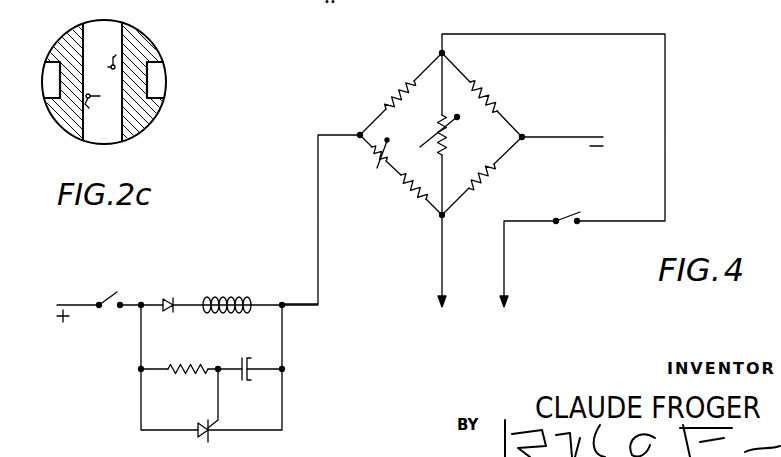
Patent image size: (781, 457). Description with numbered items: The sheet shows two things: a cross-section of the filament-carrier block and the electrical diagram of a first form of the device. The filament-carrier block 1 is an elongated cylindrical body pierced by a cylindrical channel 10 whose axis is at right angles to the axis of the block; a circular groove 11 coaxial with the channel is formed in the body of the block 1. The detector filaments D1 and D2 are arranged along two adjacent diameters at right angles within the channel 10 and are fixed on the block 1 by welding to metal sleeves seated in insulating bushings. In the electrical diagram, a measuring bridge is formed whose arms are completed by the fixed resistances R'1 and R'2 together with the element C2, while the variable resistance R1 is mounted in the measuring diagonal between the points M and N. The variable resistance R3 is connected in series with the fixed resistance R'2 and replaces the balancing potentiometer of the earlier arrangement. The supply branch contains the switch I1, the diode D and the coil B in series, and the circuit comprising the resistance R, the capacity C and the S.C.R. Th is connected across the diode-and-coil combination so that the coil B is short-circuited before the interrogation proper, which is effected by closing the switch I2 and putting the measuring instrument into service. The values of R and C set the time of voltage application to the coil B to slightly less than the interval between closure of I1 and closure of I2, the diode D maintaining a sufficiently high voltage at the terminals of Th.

In FIG. 2C, the filament-carrier block 1 is at (147, 50).
In FIG. 2C, the cylindrical channel 10 is at (127, 128).
In FIG. 2C, the circular groove 11 is at (45, 84).
In FIG. 2C, the detector filament D1 is at (102, 52).
In FIG. 4, the detector filament D1 is at (482, 95).
In FIG. 2C, the detector filament D2 is at (97, 115).
In FIG. 4, the bridge node M is at (456, 46).
In FIG. 4, the bridge node N is at (451, 224).
In FIG. 4, the fixed resistance arm R'1 is at (401, 94).
In FIG. 4, the variable resistance R1 is at (445, 134).
In FIG. 4, the variable resistance R3 is at (378, 167).
In FIG. 4, the fixed resistance arm R'2 is at (414, 200).
In FIG. 4, the bridge element C2 is at (482, 176).
In FIG. 4, the switch I1 is at (108, 318).
In FIG. 4, the switch I2 is at (565, 235).
In FIG. 4, the diode D is at (168, 292).
In FIG. 4, the coil B is at (227, 293).
In FIG. 4, the resistance R is at (194, 357).
In FIG. 4, the capacity C is at (246, 357).
In FIG. 4, the S.C.R. Th is at (192, 419).